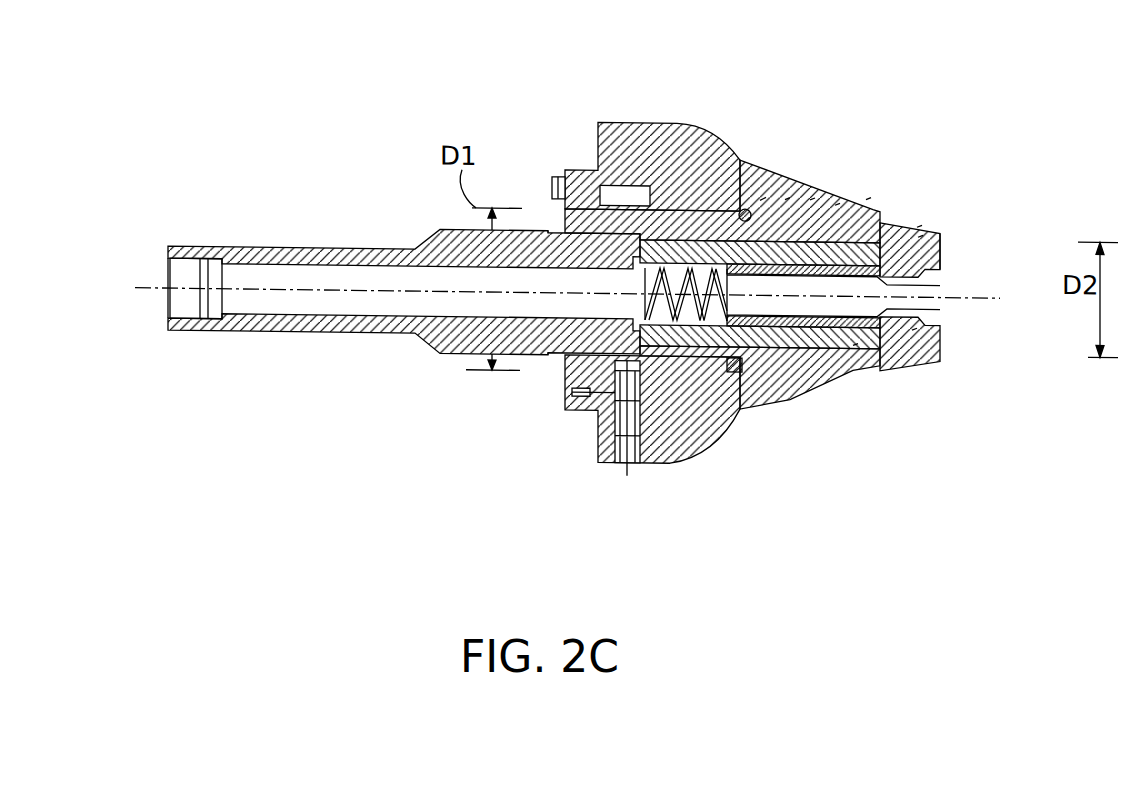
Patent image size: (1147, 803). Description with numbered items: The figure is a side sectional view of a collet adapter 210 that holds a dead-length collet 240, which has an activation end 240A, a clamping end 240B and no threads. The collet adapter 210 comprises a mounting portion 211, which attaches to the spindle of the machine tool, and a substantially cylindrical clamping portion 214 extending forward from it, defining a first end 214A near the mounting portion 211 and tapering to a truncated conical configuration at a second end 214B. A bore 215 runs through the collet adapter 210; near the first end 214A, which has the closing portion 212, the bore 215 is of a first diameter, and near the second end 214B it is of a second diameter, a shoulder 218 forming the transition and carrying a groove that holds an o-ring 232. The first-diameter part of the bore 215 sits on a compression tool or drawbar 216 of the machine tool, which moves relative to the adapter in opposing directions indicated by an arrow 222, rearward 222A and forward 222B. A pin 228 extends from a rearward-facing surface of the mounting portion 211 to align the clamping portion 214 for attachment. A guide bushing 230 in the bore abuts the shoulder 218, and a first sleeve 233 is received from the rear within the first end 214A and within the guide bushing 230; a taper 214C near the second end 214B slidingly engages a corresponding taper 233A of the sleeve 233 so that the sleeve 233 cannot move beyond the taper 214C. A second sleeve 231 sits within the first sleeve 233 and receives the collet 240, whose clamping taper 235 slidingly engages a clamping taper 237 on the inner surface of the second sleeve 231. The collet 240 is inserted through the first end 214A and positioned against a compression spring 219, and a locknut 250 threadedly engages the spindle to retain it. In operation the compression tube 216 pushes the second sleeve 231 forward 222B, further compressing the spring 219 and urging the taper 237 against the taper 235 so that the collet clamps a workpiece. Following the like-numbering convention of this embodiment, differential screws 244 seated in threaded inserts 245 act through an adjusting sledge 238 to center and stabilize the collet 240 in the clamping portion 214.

The collet adapter 210 is at (935, 479).
The mounting portion 211 is at (597, 433).
The closing portion 212 is at (565, 378).
The clamping portion 214 is at (746, 240).
The first end 214A is at (572, 131).
The second end 214B is at (897, 211).
The taper 214C is at (870, 185).
The bore 215 is at (950, 260).
The compression tool or drawbar 216 is at (342, 244).
The shoulder 218 is at (760, 193).
The compression spring 219 is at (714, 353).
The arrow 222 is at (215, 361).
The rearward direction 222A is at (210, 358).
The forward direction 222B is at (210, 358).
The pin 228 is at (552, 173).
The guide bushing 230 is at (738, 205).
The second sleeve 231 is at (846, 342).
The o-ring 232 is at (785, 192).
The first sleeve 233 is at (810, 192).
The taper 233A is at (853, 337).
The clamping taper 235 is at (918, 228).
The clamping taper 237 is at (912, 321).
The adjusting sledge 238 is at (647, 372).
The dead-length collet 240 is at (928, 321).
The activation end 240A is at (835, 197).
The clamping end 240B is at (955, 316).
The differential screw 244 is at (623, 416).
The threaded insert 245 is at (600, 452).
The locknut 250 is at (917, 218).